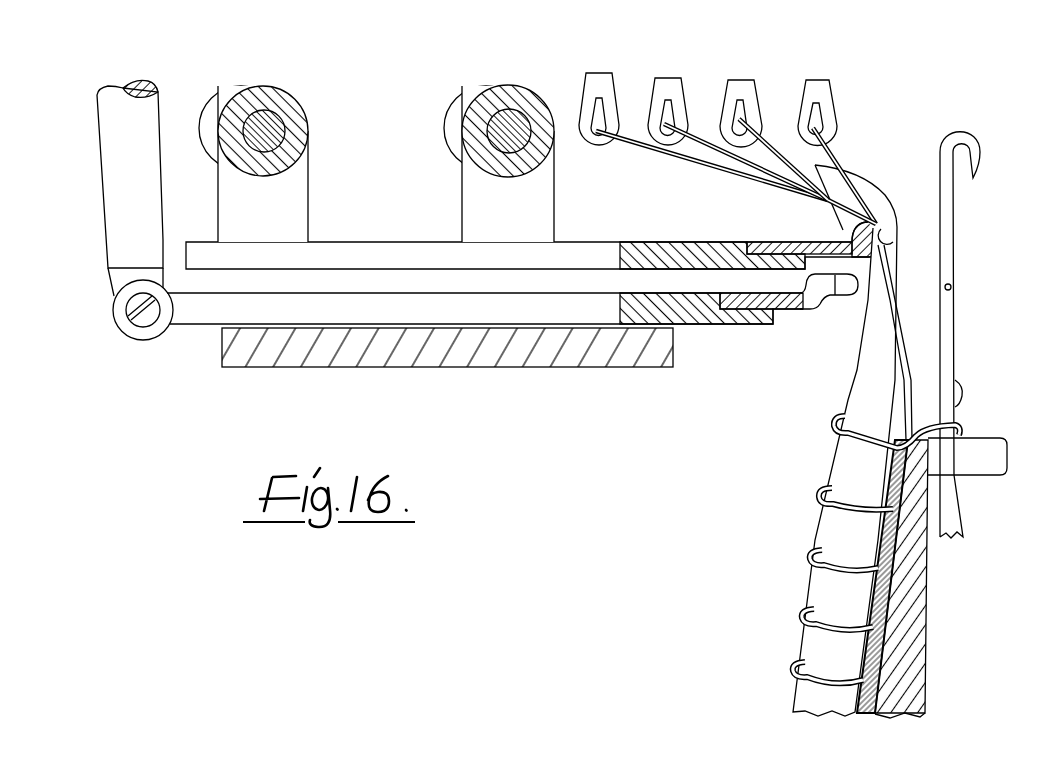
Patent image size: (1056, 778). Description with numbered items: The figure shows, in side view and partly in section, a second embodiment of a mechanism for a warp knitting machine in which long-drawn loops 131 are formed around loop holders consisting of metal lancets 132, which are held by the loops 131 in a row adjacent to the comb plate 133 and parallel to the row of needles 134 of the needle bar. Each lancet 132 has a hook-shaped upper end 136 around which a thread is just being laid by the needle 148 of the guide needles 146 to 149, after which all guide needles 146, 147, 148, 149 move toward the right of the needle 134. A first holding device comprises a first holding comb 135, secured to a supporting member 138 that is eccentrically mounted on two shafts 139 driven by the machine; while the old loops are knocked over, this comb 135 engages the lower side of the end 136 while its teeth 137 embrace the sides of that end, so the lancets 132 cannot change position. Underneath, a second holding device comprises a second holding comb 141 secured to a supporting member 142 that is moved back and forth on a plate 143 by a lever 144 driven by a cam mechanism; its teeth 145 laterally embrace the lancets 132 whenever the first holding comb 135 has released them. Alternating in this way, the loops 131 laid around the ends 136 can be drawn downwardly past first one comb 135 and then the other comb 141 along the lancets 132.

The long-drawn loops 131 is at (838, 462).
The metal lancets 132 is at (858, 403).
The comb plate 133 is at (912, 632).
The needles 134 is at (950, 265).
The first holding comb 135 is at (787, 250).
The hook-shaped upper end 136 is at (868, 185).
The teeth 137 is at (897, 228).
The supporting member 138 is at (673, 250).
The shafts 139 is at (222, 105).
The second holding comb 141 is at (800, 322).
The supporting member 142 is at (697, 318).
The plate 143 is at (406, 355).
The lever 144 is at (118, 183).
The teeth 145 is at (845, 303).
The guide needle 146 is at (603, 82).
The guide needle 147 is at (668, 83).
The guide needle 148 is at (741, 86).
The guide needle 149 is at (814, 88).